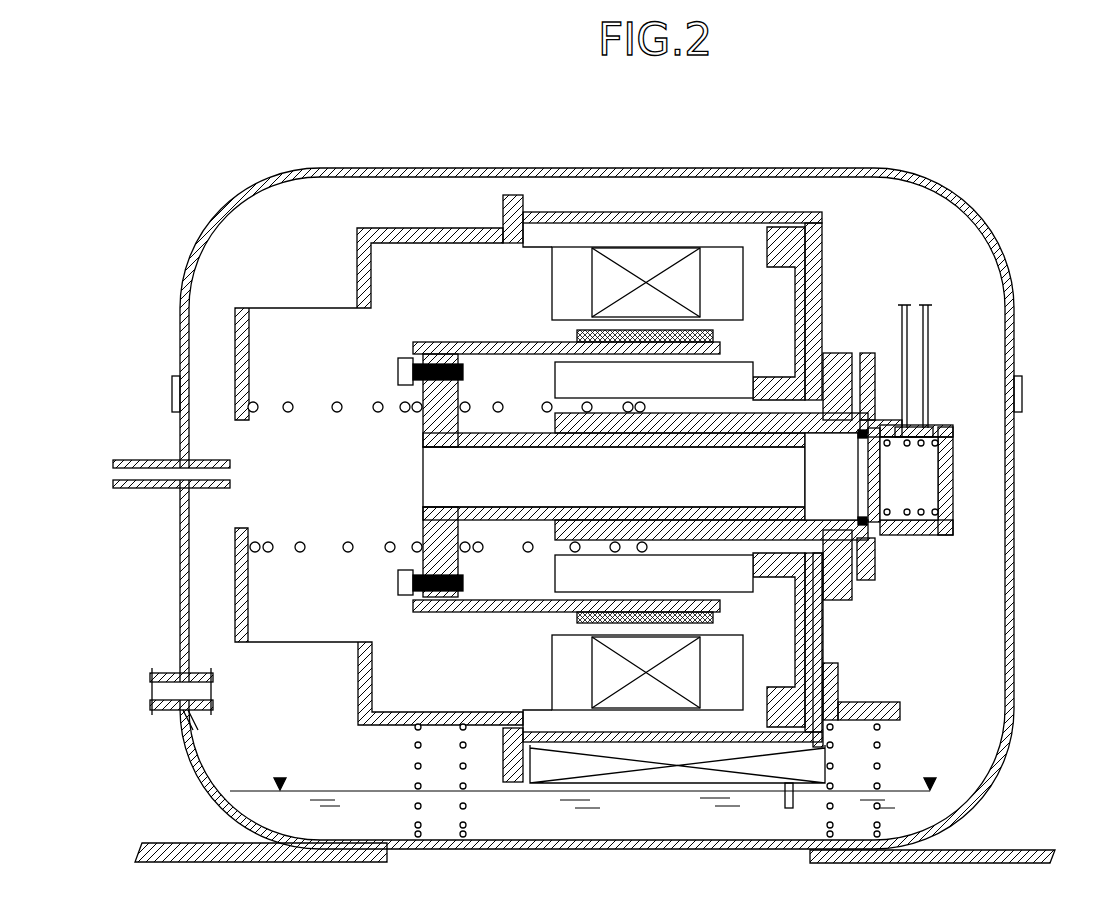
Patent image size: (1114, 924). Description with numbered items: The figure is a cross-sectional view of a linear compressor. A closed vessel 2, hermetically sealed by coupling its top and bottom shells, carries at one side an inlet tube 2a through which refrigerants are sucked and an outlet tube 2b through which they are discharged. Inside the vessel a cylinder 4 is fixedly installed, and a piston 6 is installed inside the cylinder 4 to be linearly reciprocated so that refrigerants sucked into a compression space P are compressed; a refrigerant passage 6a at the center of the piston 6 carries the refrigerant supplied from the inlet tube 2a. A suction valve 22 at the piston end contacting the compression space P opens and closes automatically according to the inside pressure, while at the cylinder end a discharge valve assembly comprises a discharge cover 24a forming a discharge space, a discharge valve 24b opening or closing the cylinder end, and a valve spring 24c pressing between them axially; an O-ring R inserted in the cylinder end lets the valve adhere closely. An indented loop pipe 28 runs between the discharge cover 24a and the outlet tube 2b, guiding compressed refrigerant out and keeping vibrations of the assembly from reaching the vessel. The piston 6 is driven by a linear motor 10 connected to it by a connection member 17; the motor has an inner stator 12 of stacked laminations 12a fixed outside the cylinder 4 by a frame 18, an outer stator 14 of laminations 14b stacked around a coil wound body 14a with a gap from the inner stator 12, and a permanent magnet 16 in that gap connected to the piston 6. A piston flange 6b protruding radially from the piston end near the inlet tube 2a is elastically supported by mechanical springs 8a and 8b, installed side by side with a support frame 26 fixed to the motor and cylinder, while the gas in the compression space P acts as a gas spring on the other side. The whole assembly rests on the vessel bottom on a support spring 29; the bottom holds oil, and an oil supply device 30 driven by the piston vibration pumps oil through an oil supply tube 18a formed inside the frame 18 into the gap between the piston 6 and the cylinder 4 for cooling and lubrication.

The closed vessel 2 is at (290, 177).
The inlet tube 2a is at (140, 460).
The outlet tube 2b is at (163, 673).
The cylinder 4 is at (840, 367).
The piston 6 is at (478, 430).
The refrigerant passage 6a is at (518, 467).
The piston flange 6b is at (430, 354).
The mechanical spring 8a is at (300, 552).
The mechanical spring 8b is at (525, 552).
The linear motor 10 is at (747, 123).
The inner stator 12 is at (573, 362).
The laminations 12a is at (576, 572).
The outer stator 14 is at (650, 247).
The coil wound body 14a is at (640, 690).
The laminations 14b is at (700, 720).
The permanent magnet 16 is at (708, 330).
The connection member 17 is at (410, 360).
The frame 18 is at (840, 685).
The oil supply tube 18a is at (823, 638).
The suction valve 22 is at (808, 400).
The discharge cover 24a is at (946, 528).
The discharge valve 24b is at (955, 552).
The valve spring 24c is at (950, 540).
The support frame 26 is at (417, 545).
The loop pipe 28 is at (930, 325).
The support spring 29 is at (408, 815).
The oil supply device 30 is at (753, 786).
The compression space P is at (838, 488).
The O-ring R is at (955, 440).